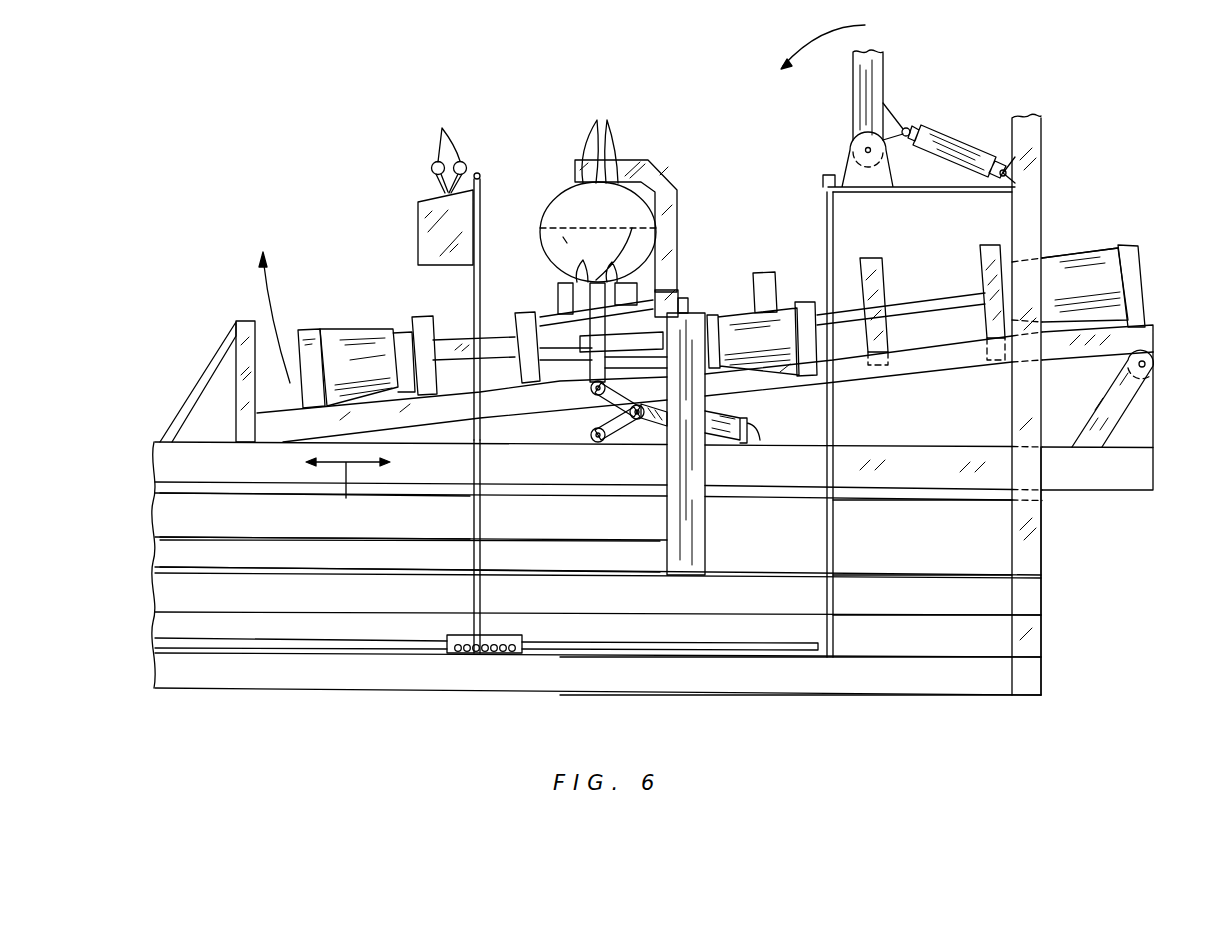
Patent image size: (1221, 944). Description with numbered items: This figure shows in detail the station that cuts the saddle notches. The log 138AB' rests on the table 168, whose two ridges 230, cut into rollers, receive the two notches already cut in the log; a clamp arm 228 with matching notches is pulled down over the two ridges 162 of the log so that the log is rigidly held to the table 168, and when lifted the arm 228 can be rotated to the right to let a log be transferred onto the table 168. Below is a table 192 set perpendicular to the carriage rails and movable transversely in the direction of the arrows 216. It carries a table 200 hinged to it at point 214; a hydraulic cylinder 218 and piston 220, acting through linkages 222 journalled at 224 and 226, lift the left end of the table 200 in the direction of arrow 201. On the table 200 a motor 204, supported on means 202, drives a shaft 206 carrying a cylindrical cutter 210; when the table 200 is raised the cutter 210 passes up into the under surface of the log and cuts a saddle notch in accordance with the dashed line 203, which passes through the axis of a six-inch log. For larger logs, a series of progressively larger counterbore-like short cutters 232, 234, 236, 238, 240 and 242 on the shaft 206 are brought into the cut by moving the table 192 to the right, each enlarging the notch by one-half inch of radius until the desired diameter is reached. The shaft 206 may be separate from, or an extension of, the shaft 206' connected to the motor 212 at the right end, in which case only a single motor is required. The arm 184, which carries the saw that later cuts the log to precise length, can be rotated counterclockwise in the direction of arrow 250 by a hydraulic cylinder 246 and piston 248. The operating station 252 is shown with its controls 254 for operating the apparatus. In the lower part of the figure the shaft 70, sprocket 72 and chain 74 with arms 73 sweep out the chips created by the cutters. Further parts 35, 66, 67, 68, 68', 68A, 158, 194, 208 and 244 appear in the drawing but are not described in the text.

The support pole 35 is at (475, 272).
The base lower frame 66 is at (865, 678).
The frame 67 is at (990, 655).
The frame panel 68 is at (922, 538).
The frame panel 68' is at (315, 516).
The frame panel 68A is at (375, 569).
The shaft 70 is at (484, 548).
The sprocket 72 is at (503, 634).
The arms 73 is at (392, 639).
The chain 74 is at (520, 645).
The log 138AB' is at (574, 217).
The center line 158 is at (598, 221).
The ridges of the log 162 is at (607, 122).
The table 168 is at (558, 302).
The arm 184 is at (884, 69).
The table 192 is at (163, 457).
The brace 194 is at (185, 382).
The table 200 is at (273, 426).
The arrow 201 is at (268, 305).
The supporting means 202 is at (317, 329).
The dashed line 203 is at (540, 250).
The motor 204 is at (362, 330).
The shaft 206 is at (474, 327).
The shaft 206' is at (901, 285).
The motor 208 is at (1127, 246).
The cylindrical cutter 210 is at (552, 338).
The motor 212 is at (1078, 258).
The hinge point 214 is at (1146, 364).
The arrows 216 is at (348, 495).
The hydraulic cylinder 218 is at (723, 437).
The piston 220 is at (645, 426).
The linkages 222 is at (613, 418).
The journal 224 is at (595, 443).
The journal 226 is at (593, 392).
The clamp arm 228 is at (668, 167).
The ridges 230 is at (625, 255).
The short cutter 232 is at (517, 370).
The short cutter 234 is at (432, 383).
The short cutter 236 is at (678, 295).
The short cutter 238 is at (762, 270).
The short cutter 240 is at (868, 258).
The short cutter 242 is at (985, 245).
The pivot 244 is at (864, 150).
The hydraulic cylinder 246 is at (950, 132).
The piston 248 is at (913, 127).
The arrow 250 is at (822, 36).
The operating station 252 is at (418, 218).
The controls 254 is at (443, 149).